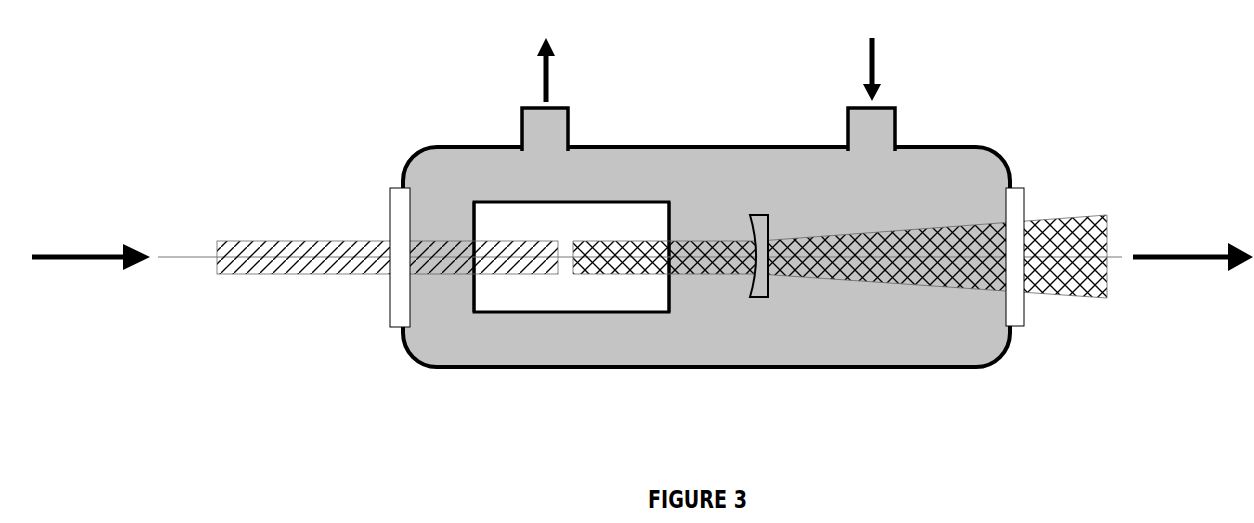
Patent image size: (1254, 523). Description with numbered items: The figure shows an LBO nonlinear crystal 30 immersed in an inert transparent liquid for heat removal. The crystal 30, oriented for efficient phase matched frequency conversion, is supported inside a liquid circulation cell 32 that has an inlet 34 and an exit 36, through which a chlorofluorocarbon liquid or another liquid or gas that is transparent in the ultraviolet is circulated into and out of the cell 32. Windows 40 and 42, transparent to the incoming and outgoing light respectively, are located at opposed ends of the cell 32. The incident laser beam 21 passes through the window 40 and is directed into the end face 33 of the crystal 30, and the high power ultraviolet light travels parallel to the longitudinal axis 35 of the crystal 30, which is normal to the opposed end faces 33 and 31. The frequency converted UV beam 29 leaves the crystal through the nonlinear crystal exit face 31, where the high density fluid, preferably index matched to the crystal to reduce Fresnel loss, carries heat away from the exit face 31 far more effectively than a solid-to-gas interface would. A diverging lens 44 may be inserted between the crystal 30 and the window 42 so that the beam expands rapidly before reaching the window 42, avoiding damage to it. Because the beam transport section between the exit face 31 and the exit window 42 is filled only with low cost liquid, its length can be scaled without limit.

The incident laser beam 21 is at (272, 240).
The UV beam 29 is at (893, 285).
The nonlinear crystal 30 is at (567, 313).
The nonlinear crystal exit face 31 is at (670, 290).
The liquid circulation cell 32 is at (976, 147).
The end face 33 is at (470, 297).
The inlet 34 is at (847, 127).
The longitudinal axis 35 is at (183, 258).
The exit 36 is at (521, 130).
The window 40 is at (390, 221).
The window 42 is at (1025, 311).
The diverging lens 44 is at (770, 287).